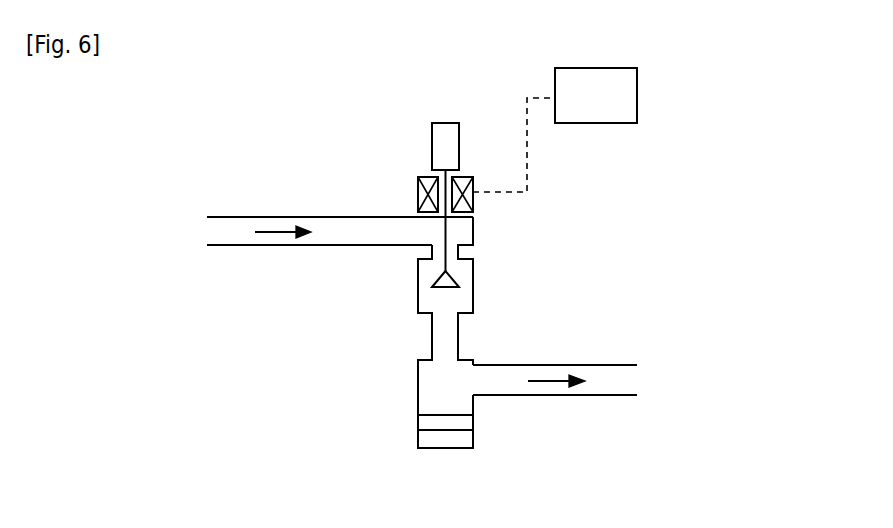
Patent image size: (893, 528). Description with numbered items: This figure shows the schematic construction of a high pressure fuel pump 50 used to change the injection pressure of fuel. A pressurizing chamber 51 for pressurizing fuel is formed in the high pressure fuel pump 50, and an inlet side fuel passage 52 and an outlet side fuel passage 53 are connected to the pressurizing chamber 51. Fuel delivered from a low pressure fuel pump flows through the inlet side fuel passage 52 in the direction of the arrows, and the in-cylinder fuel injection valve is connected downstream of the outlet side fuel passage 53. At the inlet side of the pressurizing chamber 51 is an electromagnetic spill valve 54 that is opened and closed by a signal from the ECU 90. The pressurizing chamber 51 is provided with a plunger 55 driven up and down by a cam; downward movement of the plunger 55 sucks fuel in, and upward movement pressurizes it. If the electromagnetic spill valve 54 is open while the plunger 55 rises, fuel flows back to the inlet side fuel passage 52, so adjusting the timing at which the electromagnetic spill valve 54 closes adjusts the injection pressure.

The high pressure fuel pump 50 is at (541, 267).
The pressurizing chamber 51 is at (458, 300).
The inlet side fuel passage 52 is at (352, 230).
The outlet side fuel passage 53 is at (520, 388).
The electromagnetic spill valve 54 is at (440, 288).
The plunger 55 is at (438, 413).
The ECU 90 is at (637, 96).